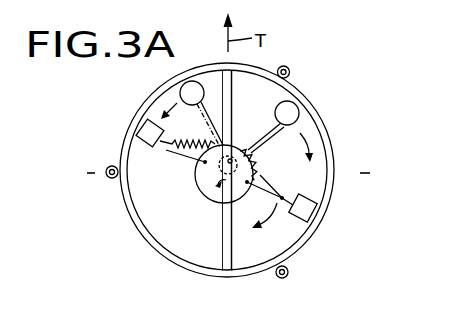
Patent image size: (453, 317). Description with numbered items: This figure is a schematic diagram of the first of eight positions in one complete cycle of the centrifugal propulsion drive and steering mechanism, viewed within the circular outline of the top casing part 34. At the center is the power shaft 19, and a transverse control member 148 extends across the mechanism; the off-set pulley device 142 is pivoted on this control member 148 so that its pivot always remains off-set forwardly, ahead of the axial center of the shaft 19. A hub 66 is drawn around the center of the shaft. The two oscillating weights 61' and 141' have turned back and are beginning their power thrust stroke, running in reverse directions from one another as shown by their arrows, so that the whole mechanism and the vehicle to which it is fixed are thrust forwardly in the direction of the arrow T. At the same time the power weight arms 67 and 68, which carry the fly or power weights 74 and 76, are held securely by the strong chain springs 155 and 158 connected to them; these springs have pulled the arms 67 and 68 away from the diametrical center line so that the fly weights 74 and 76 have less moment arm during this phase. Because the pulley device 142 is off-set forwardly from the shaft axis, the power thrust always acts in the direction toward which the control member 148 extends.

The top casing part 34 is at (160, 256).
The transverse control member 148 is at (224, 237).
The hub 66 is at (214, 193).
The off-set pulley device 142 is at (233, 158).
The power shaft 19 is at (222, 172).
The power weight arm 68 is at (195, 160).
The chain spring 158 is at (198, 146).
The power weight 76 is at (140, 134).
The oscillating weight 61' is at (157, 108).
The oscillating weight 141' is at (309, 116).
The chain spring 155 is at (287, 150).
The power weight 74 is at (317, 208).
The power weight arm 67 is at (285, 205).